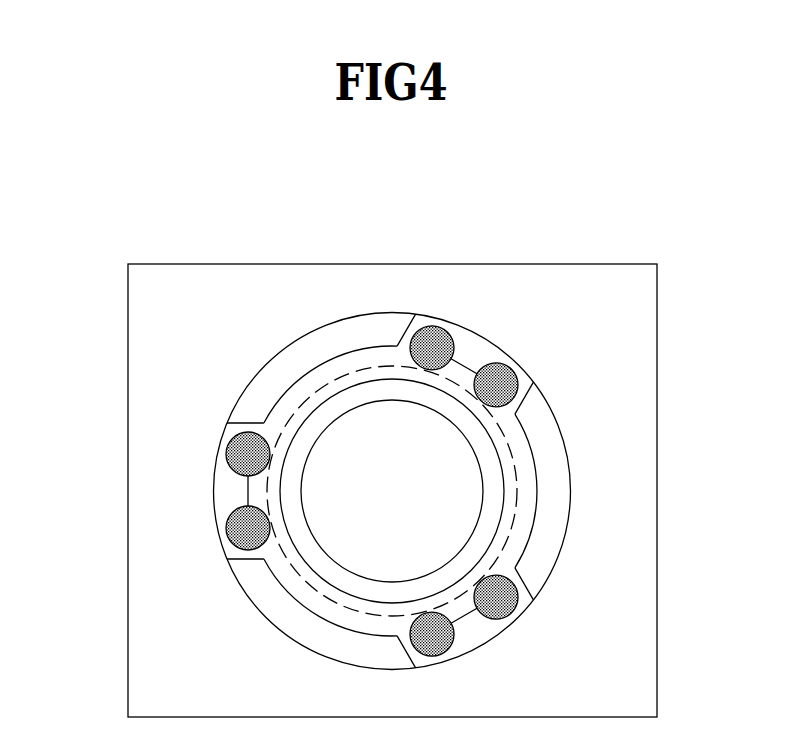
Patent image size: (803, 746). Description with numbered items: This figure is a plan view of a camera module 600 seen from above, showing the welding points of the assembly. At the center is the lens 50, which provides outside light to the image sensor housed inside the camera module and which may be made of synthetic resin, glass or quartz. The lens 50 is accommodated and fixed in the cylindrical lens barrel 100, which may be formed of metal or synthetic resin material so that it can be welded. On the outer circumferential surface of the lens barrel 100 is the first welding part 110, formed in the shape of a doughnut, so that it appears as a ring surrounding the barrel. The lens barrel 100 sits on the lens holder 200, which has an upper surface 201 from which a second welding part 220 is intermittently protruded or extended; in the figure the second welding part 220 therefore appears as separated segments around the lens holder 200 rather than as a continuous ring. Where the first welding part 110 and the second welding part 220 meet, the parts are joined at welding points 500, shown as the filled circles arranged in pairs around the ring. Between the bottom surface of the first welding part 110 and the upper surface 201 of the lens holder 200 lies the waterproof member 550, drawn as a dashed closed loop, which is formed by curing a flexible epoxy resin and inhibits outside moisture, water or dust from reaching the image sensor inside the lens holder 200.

The camera module 600 is at (544, 250).
The lens holder 200 is at (619, 382).
The upper surface 201 is at (272, 374).
The second welding part 220 is at (222, 485).
The first welding part 110 is at (530, 470).
The waterproof member 550 is at (333, 378).
The lens barrel 100 is at (498, 507).
The lens 50 is at (393, 428).
The welding point 500 is at (231, 520).